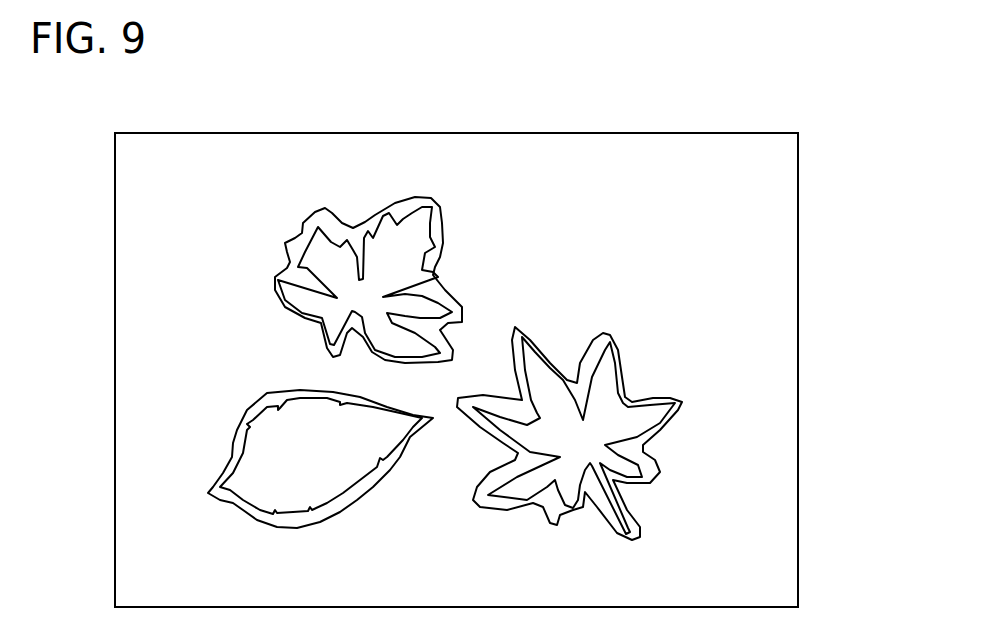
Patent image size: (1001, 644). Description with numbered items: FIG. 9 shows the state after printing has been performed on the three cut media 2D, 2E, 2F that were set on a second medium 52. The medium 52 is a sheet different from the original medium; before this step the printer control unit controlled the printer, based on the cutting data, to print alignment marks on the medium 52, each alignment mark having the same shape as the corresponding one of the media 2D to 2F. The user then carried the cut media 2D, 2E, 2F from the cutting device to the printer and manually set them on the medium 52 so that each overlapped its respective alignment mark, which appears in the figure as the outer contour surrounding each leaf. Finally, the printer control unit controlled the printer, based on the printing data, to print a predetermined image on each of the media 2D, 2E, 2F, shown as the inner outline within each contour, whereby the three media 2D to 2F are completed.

The medium 52 is at (798, 330).
The medium 2D is at (320, 463).
The medium 2E is at (385, 253).
The medium 2F is at (612, 403).